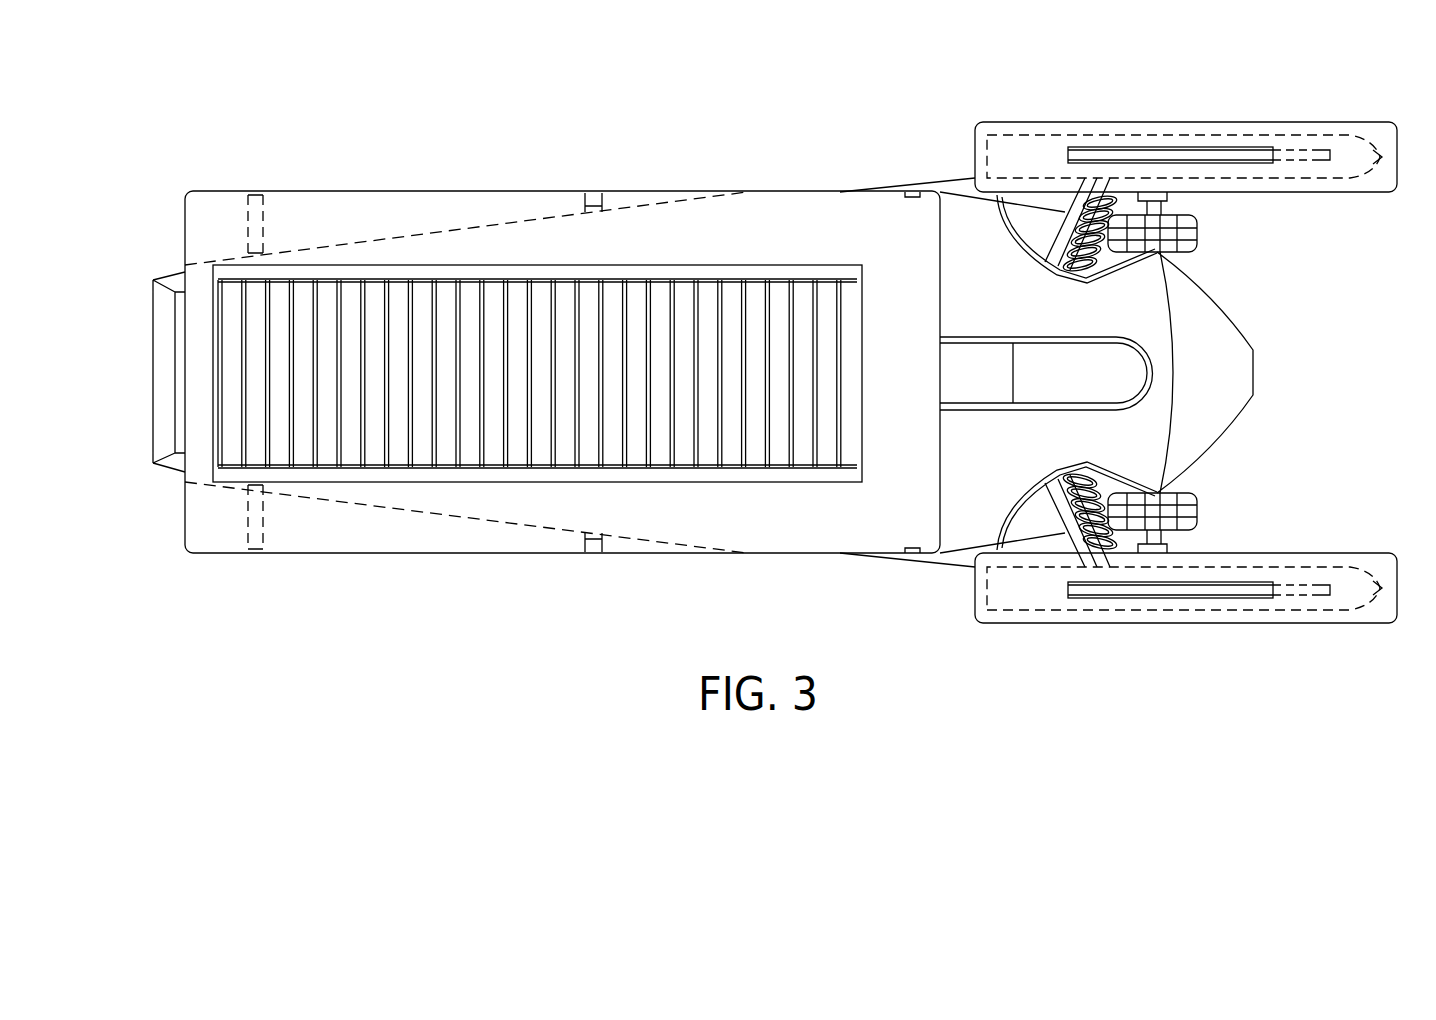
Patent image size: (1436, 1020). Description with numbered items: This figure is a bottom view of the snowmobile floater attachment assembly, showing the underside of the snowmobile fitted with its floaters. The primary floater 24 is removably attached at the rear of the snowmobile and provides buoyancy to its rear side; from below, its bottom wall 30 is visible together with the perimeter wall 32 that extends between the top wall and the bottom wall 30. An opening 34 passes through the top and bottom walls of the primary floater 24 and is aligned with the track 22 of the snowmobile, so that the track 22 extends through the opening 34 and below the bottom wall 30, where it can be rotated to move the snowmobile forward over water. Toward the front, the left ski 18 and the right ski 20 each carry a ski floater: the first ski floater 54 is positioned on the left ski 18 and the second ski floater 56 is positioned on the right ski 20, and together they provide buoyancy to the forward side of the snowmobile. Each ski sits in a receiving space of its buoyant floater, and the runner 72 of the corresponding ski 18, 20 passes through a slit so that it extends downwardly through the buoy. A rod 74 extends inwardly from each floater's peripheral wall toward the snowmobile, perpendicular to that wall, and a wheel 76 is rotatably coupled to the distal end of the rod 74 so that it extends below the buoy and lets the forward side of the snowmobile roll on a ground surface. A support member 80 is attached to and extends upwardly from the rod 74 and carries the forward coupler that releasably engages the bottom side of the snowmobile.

The left ski 18 is at (1363, 572).
The right ski 20 is at (1338, 137).
The track 22 is at (612, 363).
The primary floater 24 is at (205, 163).
The bottom wall 30 is at (365, 215).
The perimeter wall 32 is at (297, 192).
The opening 34 is at (564, 246).
The first ski floater 54 is at (1313, 577).
The second ski floater 56 is at (1375, 185).
The runner 72 is at (1240, 598).
The rod 74 is at (1190, 515).
The wheel 76 is at (1168, 546).
The support member 80 is at (1173, 547).